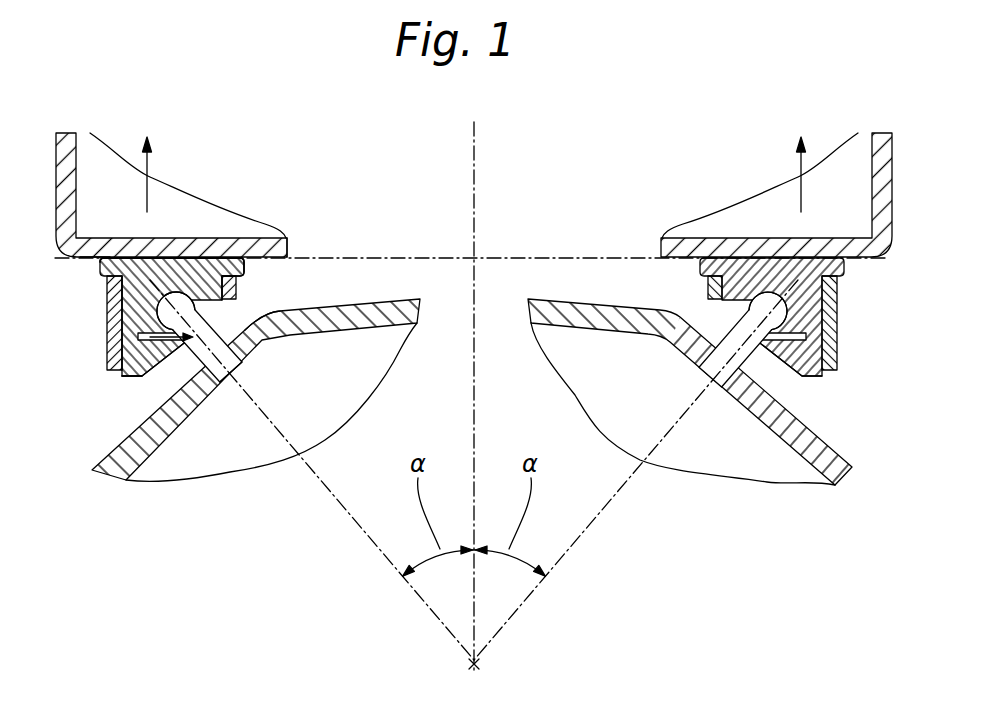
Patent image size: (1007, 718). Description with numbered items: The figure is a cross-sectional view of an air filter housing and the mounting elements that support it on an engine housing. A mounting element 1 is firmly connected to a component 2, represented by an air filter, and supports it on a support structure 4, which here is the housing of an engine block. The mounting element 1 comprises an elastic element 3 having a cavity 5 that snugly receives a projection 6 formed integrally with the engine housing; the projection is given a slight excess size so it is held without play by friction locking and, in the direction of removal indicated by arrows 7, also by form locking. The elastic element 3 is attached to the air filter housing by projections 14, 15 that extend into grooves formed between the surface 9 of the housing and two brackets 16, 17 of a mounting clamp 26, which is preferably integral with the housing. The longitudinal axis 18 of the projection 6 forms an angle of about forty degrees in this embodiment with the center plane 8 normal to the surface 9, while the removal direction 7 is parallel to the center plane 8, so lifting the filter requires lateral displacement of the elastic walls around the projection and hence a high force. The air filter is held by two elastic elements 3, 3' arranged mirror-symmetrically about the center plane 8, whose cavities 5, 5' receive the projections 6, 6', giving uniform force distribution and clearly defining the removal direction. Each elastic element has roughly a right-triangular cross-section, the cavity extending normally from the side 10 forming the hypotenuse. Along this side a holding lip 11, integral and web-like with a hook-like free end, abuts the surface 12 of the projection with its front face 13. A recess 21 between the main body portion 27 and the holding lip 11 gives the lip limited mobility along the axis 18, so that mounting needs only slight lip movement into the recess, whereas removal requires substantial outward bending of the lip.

The mounting element 1 is at (272, 297).
The component 2 is at (72, 158).
The elastic element 3 is at (148, 339).
The elastic element 3' is at (797, 317).
The support structure 4 is at (113, 470).
The cavity 5 is at (244, 327).
The cavity 5' is at (719, 303).
The projection 6 is at (224, 355).
The projection 6' is at (743, 371).
The direction of removal 7 is at (150, 200).
The center plane 8 is at (474, 163).
The surface 9 is at (532, 257).
The side 10 is at (792, 367).
The holding lip 11 is at (135, 376).
The surface 12 is at (265, 342).
The front face 13 is at (219, 382).
The projection 14 is at (92, 246).
The projection 15 is at (257, 247).
The bracket 16 is at (120, 321).
The bracket 17 is at (237, 288).
The longitudinal axis 18 is at (327, 500).
The recess 21 is at (113, 351).
The mounting clamp 26 is at (99, 301).
The main body portion 27 is at (102, 283).